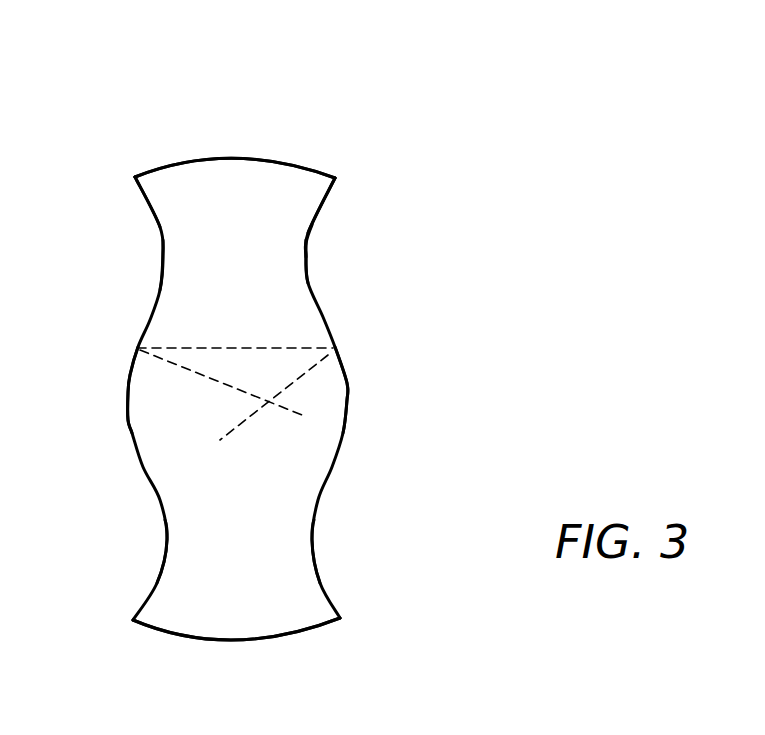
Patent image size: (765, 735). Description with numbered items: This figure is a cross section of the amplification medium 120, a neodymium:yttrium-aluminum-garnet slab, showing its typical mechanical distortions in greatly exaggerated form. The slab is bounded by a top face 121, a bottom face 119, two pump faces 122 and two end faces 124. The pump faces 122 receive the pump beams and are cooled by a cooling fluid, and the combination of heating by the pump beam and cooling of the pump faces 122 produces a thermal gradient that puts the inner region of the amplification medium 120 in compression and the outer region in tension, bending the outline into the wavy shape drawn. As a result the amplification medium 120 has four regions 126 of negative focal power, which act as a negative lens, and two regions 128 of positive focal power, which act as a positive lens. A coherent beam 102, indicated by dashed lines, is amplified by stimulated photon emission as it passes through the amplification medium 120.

The amplification medium 120 is at (233, 134).
The top face 121 is at (282, 160).
The pump faces 122 is at (143, 192).
The end faces 124 is at (293, 222).
The regions of negative focal power 126 is at (163, 253).
The regions of positive focal power 128 is at (128, 390).
The coherent beam 102 is at (218, 347).
The bottom face 119 is at (233, 642).